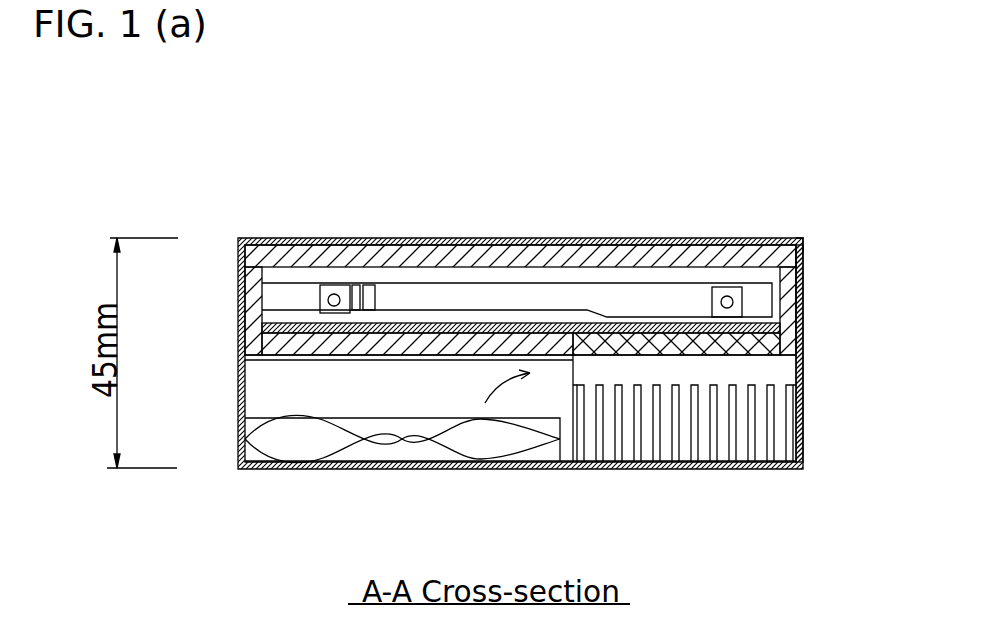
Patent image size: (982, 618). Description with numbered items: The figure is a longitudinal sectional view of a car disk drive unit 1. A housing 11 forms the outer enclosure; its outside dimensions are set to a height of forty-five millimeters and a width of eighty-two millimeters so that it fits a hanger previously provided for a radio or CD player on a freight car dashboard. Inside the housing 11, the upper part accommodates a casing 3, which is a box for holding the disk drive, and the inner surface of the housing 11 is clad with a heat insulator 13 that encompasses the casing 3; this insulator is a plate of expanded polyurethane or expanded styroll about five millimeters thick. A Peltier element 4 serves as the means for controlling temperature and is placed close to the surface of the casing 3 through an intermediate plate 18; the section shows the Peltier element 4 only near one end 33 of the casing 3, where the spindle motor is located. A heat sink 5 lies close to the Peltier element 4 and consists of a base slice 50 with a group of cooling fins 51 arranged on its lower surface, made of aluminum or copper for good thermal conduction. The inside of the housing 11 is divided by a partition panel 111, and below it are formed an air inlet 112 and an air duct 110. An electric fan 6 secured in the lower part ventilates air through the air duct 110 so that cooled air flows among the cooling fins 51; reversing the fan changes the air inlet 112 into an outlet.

The car disk drive unit 1 is at (790, 176).
The casing 3 is at (540, 278).
The Peltier element 4 is at (752, 360).
The heat sink 5 is at (612, 478).
The electric fan 6 is at (330, 450).
The housing 11 is at (806, 280).
The heat insulator 13 is at (289, 250).
The intermediate plate 18 is at (430, 328).
The one end of the casing 33 is at (805, 239).
The base slice 50 is at (778, 373).
The cooling fins 51 is at (787, 438).
The air duct 110 is at (543, 382).
The partition panel 111 is at (331, 359).
The air inlet 112 is at (248, 468).